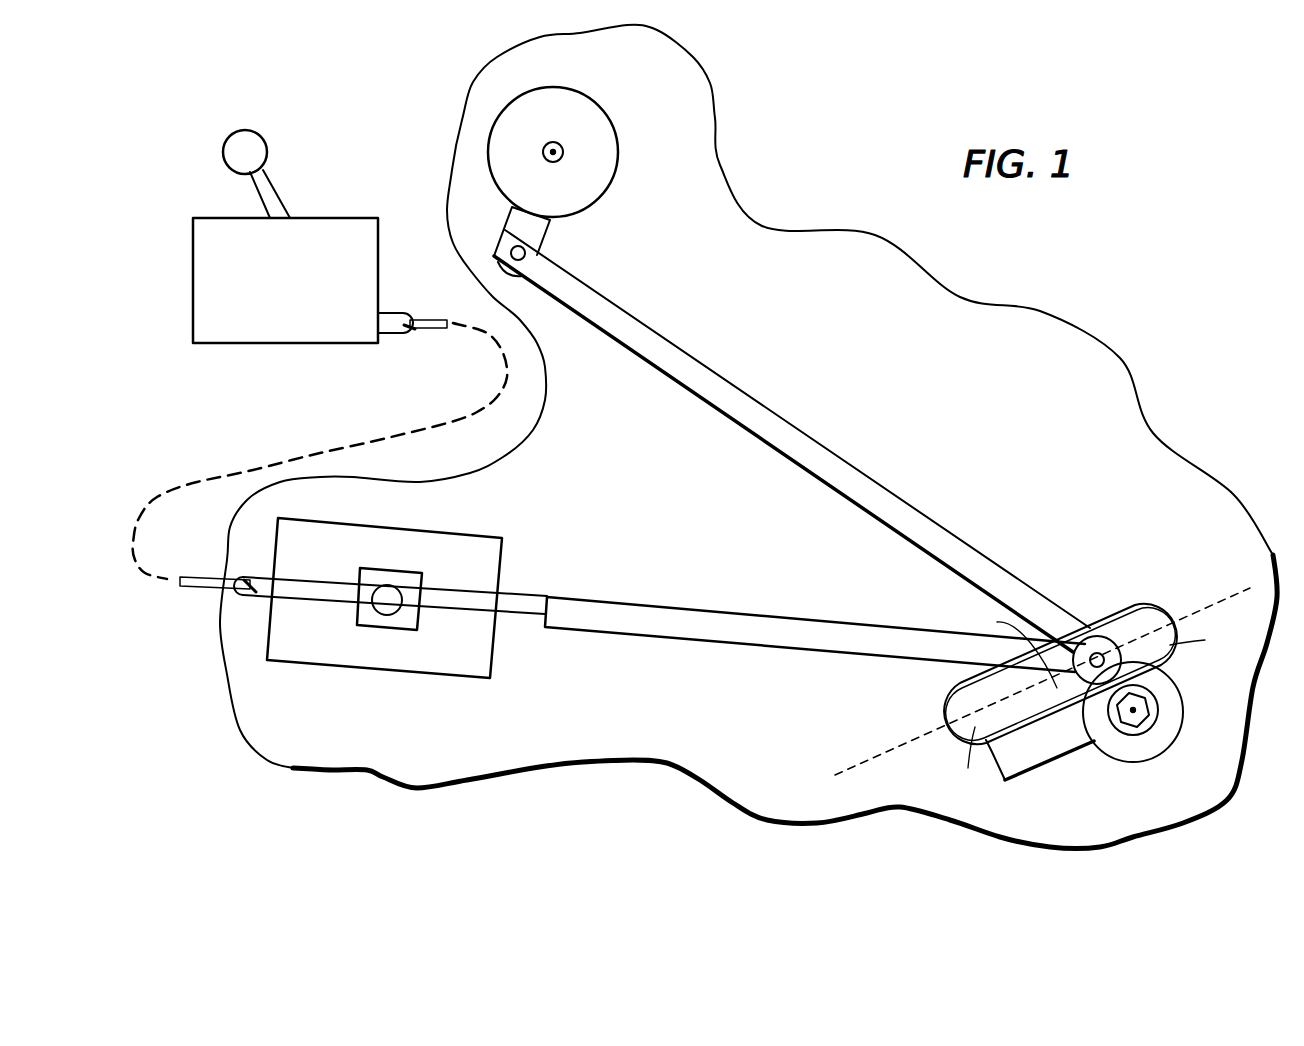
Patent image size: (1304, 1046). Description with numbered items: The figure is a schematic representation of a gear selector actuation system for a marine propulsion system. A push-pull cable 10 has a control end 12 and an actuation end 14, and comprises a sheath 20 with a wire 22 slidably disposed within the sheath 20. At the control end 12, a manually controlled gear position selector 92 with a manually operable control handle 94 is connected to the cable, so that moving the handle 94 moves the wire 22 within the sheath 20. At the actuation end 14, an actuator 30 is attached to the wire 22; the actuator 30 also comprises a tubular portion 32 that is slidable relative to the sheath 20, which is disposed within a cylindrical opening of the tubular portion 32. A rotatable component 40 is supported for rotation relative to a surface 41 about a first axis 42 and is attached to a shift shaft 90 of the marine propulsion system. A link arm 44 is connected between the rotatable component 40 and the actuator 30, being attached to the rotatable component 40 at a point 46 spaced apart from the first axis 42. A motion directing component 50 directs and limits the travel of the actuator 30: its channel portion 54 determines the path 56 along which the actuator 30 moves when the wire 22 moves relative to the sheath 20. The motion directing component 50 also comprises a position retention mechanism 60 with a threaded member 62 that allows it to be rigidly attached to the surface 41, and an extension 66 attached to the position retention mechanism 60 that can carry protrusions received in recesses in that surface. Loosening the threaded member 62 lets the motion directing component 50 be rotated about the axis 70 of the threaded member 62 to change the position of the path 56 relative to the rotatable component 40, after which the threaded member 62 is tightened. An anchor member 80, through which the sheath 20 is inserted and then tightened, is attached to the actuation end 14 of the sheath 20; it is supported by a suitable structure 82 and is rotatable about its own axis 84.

The push-pull cable 10 is at (394, 322).
The control end 12 is at (393, 333).
The actuation end 14 is at (520, 569).
The sheath 20 is at (400, 333).
The wire 22 is at (433, 318).
The actuator 30 is at (1095, 650).
The tubular portion 32 is at (848, 630).
The rotatable component 40 is at (600, 168).
The surface 41 is at (567, 748).
The first axis 42 is at (563, 150).
The link arm 44 is at (708, 372).
The point 46 is at (528, 255).
The motion directing component 50 is at (1157, 594).
The channel portion 54 is at (947, 698).
The path 56 is at (882, 758).
The position retention mechanism 60 is at (1173, 688).
The threaded member 62 is at (1143, 713).
The extension 66 is at (1027, 762).
The axis 70 is at (1130, 714).
The anchor member 80 is at (400, 573).
The structure 82 is at (298, 655).
The axis 84 is at (387, 588).
The shift shaft 90 is at (553, 144).
The gear position selector 92 is at (352, 230).
The control handle 94 is at (264, 185).